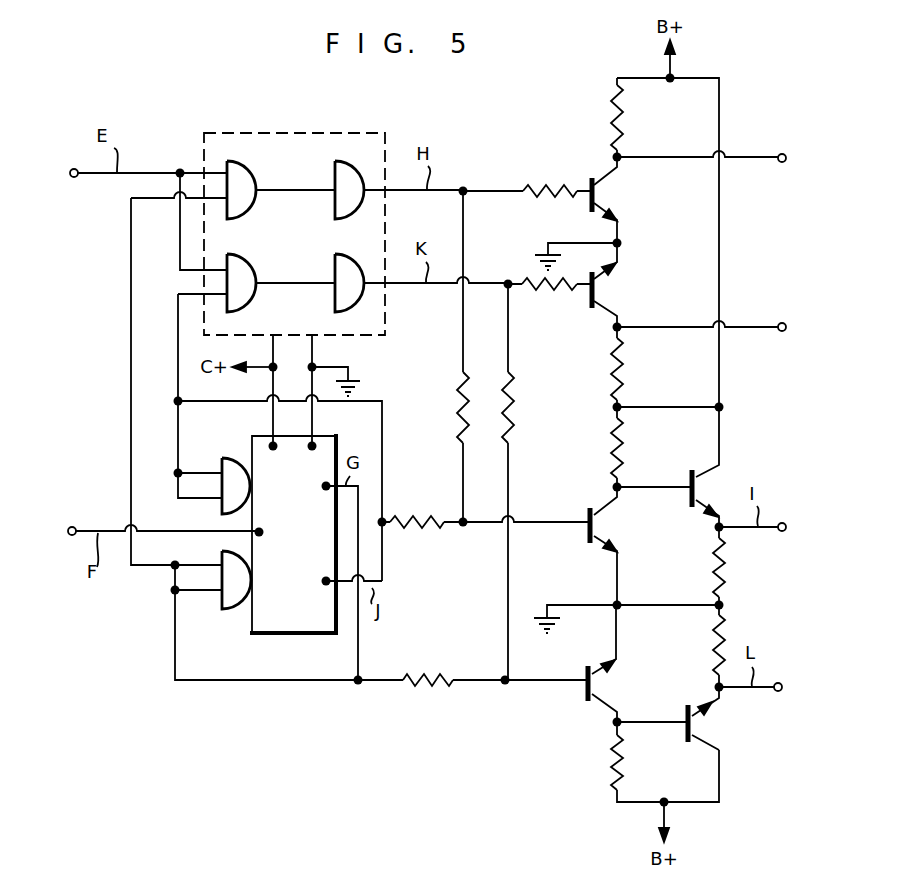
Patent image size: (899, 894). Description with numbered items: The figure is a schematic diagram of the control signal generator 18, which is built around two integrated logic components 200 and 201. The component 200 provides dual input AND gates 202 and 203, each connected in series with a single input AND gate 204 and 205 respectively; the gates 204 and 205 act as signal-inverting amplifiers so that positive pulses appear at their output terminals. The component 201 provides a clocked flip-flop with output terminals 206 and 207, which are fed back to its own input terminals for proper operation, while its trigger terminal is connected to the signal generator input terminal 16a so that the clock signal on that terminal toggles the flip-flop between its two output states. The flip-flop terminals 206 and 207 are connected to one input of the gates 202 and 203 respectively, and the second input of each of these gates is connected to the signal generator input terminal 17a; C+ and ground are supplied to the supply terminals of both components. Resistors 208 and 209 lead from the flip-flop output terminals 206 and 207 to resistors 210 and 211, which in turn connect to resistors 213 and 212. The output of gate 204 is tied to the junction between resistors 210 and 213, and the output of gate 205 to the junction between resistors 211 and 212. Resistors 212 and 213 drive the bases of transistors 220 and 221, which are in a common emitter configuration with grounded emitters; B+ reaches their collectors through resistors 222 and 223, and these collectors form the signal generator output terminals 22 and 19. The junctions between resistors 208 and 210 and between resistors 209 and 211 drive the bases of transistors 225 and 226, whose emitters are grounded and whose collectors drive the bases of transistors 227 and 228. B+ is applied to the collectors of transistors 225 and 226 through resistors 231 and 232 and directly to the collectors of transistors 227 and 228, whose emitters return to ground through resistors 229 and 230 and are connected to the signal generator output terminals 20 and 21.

The signal generator input terminal 16a is at (70, 535).
The signal generator input terminal 17a is at (71, 168).
The control signal generator 18 is at (505, 148).
The signal generator output terminal 19 is at (788, 157).
The signal generator output terminal 20 is at (786, 521).
The signal generator output terminal 21 is at (782, 682).
The signal generator output terminal 22 is at (789, 327).
The integrated logic component 200 is at (294, 133).
The integrated logic component 201 is at (310, 620).
The dual input AND gate 202 is at (247, 180).
The dual input AND gate 203 is at (241, 272).
The single input AND gate 204 is at (346, 178).
The single input AND gate 205 is at (352, 272).
The flip-flop output terminal 206 is at (326, 486).
The flip-flop output terminal 207 is at (326, 581).
The resistor 208 is at (422, 517).
The resistor 209 is at (430, 675).
The resistor 210 is at (458, 406).
The resistor 211 is at (513, 410).
The resistor 212 is at (557, 292).
The resistor 213 is at (556, 190).
The transistor 220 is at (585, 298).
The transistor 221 is at (589, 182).
The resistor 222 is at (624, 370).
The resistor 223 is at (624, 127).
The transistor 225 is at (586, 512).
The transistor 226 is at (584, 697).
The transistor 227 is at (688, 497).
The transistor 228 is at (683, 713).
The resistor 229 is at (714, 565).
The resistor 230 is at (712, 648).
The resistor 231 is at (625, 457).
The resistor 232 is at (620, 766).